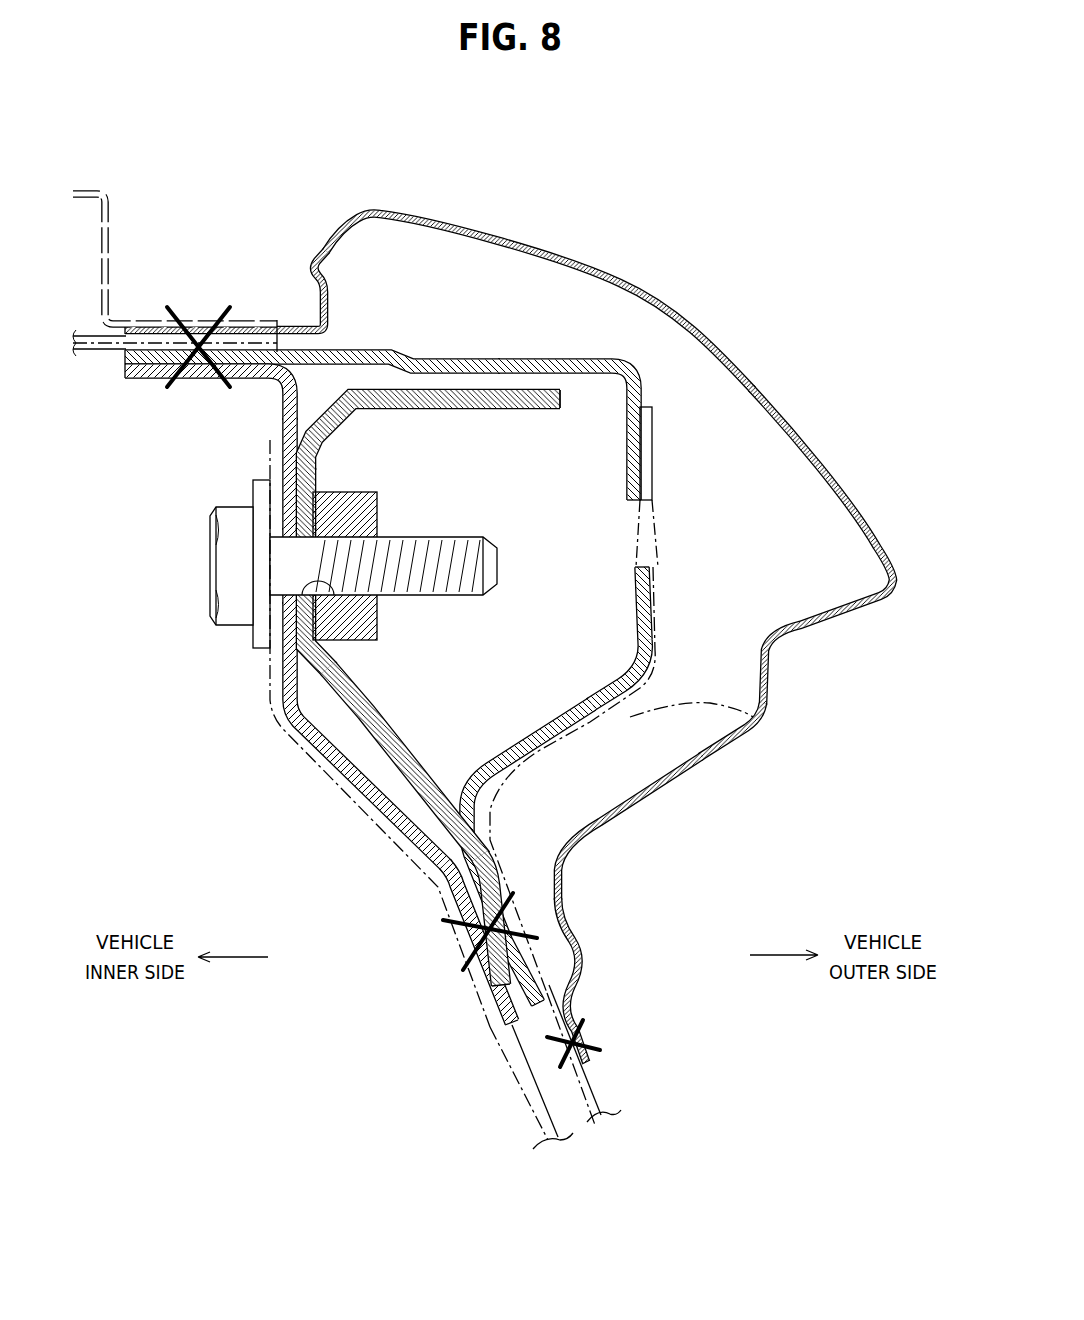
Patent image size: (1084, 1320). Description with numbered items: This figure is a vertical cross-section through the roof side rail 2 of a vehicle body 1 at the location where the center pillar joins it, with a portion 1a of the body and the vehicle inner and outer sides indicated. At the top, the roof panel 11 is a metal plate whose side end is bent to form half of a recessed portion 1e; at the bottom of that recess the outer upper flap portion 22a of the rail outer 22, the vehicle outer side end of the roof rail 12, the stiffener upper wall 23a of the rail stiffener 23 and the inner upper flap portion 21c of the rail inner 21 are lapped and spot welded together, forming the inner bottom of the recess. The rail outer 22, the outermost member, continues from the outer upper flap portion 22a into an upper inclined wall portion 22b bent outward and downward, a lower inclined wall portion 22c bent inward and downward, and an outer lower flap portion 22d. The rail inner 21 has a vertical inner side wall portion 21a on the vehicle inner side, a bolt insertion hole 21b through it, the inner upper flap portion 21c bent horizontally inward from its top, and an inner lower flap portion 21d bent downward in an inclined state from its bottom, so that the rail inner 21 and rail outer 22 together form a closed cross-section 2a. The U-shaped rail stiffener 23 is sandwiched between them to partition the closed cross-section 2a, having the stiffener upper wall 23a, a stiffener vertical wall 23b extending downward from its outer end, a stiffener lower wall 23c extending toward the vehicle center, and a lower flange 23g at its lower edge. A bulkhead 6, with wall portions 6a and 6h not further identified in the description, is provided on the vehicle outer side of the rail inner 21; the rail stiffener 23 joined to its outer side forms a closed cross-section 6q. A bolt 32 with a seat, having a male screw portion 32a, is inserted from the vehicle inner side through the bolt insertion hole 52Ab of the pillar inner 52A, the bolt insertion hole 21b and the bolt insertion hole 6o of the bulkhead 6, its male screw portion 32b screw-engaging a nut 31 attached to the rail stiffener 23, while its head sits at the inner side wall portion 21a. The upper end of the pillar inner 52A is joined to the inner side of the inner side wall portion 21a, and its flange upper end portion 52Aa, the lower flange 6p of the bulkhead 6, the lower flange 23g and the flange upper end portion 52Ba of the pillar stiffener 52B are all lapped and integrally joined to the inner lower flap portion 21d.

The vehicle body 1 is at (271, 113).
The door opening 1a is at (703, 975).
The recessed portion 1e is at (198, 308).
The roof side rail 2 is at (509, 570).
The closed cross-section 2a is at (403, 737).
The bulkhead 6 is at (565, 675).
The bracket vertical wall 6a is at (316, 478).
The bracket upper arm 6h is at (490, 390).
The bolt insertion hole 6o is at (326, 598).
The lower flange 6p is at (495, 975).
The closed cross-section 6q is at (565, 500).
The roof panel 11 is at (118, 207).
The roof rail 12 is at (78, 352).
The rail inner 21 is at (321, 694).
The inner side wall portion 21a is at (283, 455).
The bolt insertion hole 21b is at (287, 548).
The inner upper flap portion 21c is at (193, 380).
The inner lower flap portion 21d is at (498, 960).
The rail outer 22 is at (641, 289).
The outer upper flap portion 22a is at (298, 326).
The upper inclined wall portion 22b is at (689, 320).
The lower inclined wall portion 22c is at (606, 822).
The outer lower flap portion 22d is at (588, 1008).
The rail stiffener 23 is at (486, 580).
The stiffener upper wall 23a is at (360, 350).
The stiffener vertical wall 23b is at (652, 604).
The stiffener lower wall 23c is at (560, 736).
The lower flange 23g is at (528, 958).
The nut 31 is at (379, 625).
The bolt 32 is at (322, 583).
The male screw portion 32a is at (230, 615).
The male screw portion 32b is at (463, 537).
The pillar inner 52A is at (268, 712).
The flange upper end portion 52Aa is at (490, 1022).
The bolt insertion hole 52Ab is at (232, 605).
The pillar stiffener 52B is at (753, 718).
The flange upper end portion 52Ba is at (552, 983).